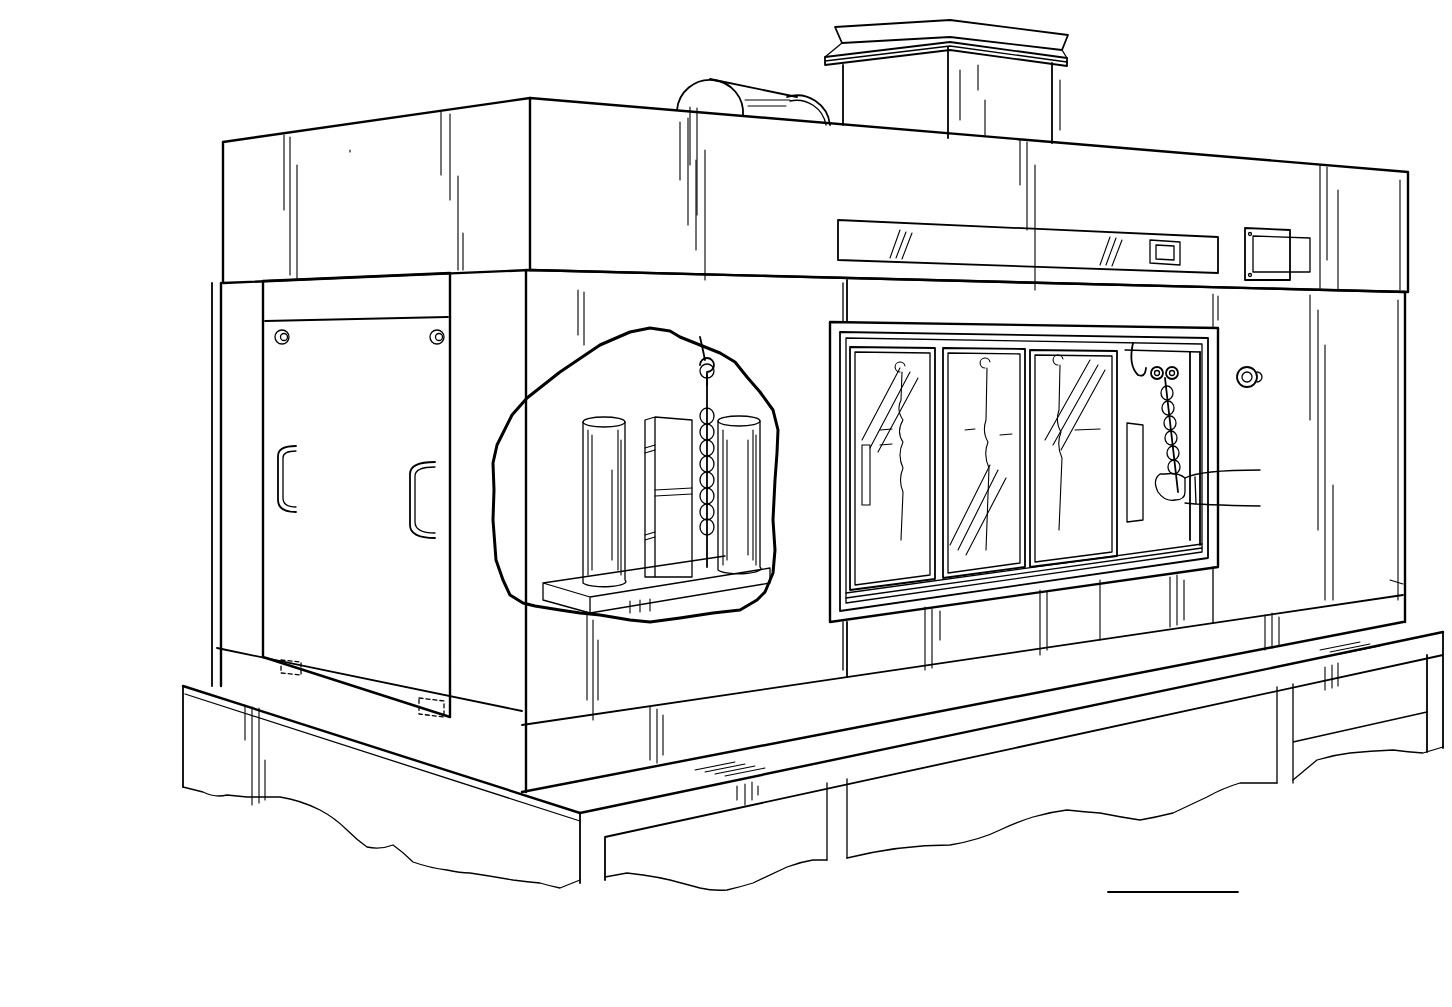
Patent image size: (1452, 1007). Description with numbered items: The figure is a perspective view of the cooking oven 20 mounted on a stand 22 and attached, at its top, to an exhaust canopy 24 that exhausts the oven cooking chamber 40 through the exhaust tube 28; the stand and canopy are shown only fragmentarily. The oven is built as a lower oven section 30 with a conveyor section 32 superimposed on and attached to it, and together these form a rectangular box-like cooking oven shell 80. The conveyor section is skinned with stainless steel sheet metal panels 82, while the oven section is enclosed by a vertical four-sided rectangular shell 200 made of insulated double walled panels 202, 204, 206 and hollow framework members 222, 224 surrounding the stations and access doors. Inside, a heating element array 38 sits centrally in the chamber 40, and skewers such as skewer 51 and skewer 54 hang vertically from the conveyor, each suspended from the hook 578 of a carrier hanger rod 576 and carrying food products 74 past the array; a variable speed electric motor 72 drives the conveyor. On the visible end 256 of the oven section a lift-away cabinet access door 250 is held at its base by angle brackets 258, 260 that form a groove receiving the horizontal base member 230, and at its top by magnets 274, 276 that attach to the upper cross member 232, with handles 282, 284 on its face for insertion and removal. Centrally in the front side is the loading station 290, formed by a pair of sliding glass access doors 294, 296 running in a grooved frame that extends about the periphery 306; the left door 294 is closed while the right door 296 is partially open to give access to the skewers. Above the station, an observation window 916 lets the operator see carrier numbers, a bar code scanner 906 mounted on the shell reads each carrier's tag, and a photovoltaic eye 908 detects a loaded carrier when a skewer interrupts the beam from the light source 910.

The cooking oven 20 is at (232, 100).
The stand 22 is at (799, 761).
The exhaust canopy 24 is at (835, 37).
The exhaust tube 28 is at (1048, 115).
The oven section 30 is at (215, 290).
The conveyor section 32 is at (215, 283).
The heating element array 38 is at (755, 408).
The oven cooking chamber 40 is at (528, 559).
The food skewer 51 is at (716, 375).
The food skewer 54 is at (1190, 407).
The variable speed electric motor 72 is at (770, 96).
The food products 74 is at (1196, 443).
The cooking oven shell 80 is at (1397, 272).
The stainless steel sheet metal panels 82 is at (366, 130).
The rectangular shell 200 is at (1386, 455).
The double walled panel 202 is at (513, 728).
The double walled panel 204 is at (221, 548).
The double walled panel 206 is at (1394, 584).
The structural hollow framework member 222 is at (885, 658).
The structural hollow framework member 224 is at (857, 296).
The horizontal base member 230 is at (455, 755).
The upper cross member 232 is at (348, 292).
The cabinet access door 250 is at (375, 561).
The end of oven section 256 is at (1412, 402).
The angle bracket 258 is at (432, 695).
The angle bracket 260 is at (290, 660).
The magnet 274 is at (438, 347).
The magnet 276 is at (288, 350).
The handle 282 is at (409, 487).
The handle 284 is at (292, 452).
The loading station 290 is at (989, 486).
The sliding glass access door 294 is at (1082, 543).
The sliding glass access door 296 is at (923, 567).
The periphery of loading station 306 is at (824, 620).
The carrier hanger rod 576 is at (1165, 358).
The hook 578 is at (1133, 343).
The bar code scanner 906 is at (1304, 244).
The photovoltaic eye 908 is at (1246, 367).
The light source 910 is at (1183, 360).
The observation window 916 is at (1092, 245).